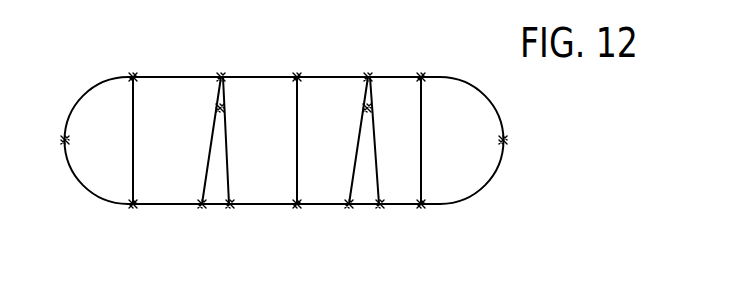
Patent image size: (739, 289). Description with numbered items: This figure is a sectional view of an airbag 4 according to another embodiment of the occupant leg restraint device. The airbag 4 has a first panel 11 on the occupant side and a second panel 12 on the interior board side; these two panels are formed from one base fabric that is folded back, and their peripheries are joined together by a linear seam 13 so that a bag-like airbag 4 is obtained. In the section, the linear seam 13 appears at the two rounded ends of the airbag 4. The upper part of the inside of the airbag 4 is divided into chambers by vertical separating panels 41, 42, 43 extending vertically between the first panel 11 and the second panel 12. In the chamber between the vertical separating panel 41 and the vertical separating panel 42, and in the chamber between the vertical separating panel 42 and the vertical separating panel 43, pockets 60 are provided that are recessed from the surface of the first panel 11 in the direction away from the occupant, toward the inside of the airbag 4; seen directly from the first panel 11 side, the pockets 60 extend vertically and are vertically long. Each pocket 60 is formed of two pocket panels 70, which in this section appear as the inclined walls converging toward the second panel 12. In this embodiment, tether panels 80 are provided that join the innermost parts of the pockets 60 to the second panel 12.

The airbag 4 is at (66, 87).
The first panel 11 is at (447, 207).
The second panel 12 is at (333, 76).
The linear seam 13 is at (62, 141).
The vertical separating panel 41 is at (131, 140).
The vertical separating panel 42 is at (298, 114).
The vertical separating panel 43 is at (423, 128).
The pocket 60 is at (283, 170).
The pocket panel 70 is at (211, 154).
The tether panel 80 is at (215, 99).